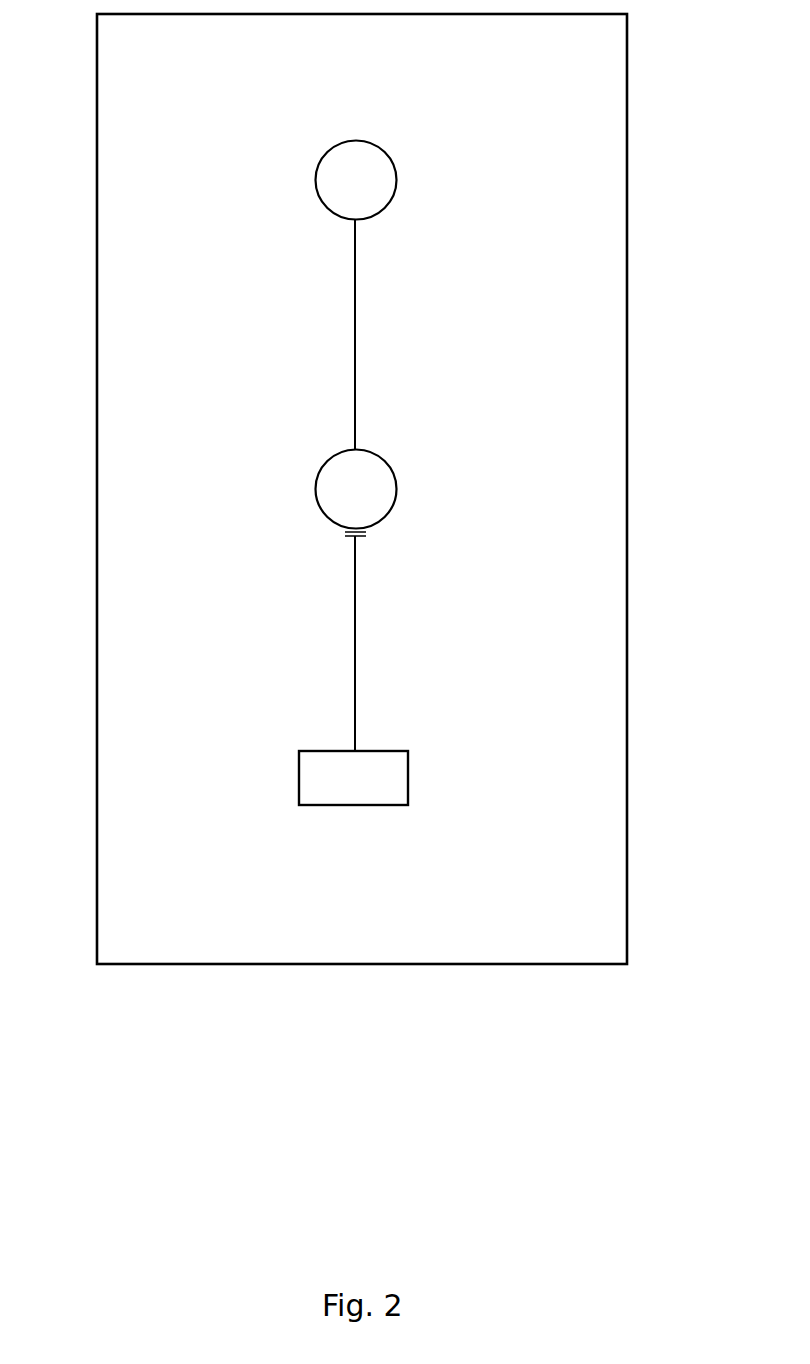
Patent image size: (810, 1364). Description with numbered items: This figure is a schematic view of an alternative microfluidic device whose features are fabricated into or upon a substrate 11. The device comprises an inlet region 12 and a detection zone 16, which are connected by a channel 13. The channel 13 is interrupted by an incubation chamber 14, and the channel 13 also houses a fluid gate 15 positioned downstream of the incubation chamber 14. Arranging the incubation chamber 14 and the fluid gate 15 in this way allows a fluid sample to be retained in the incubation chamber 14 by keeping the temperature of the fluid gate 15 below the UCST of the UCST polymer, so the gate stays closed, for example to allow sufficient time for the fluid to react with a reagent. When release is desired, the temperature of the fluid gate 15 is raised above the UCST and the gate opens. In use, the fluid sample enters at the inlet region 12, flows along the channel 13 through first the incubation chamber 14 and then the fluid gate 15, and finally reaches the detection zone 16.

The substrate 11 is at (157, 93).
The inlet region 12 is at (370, 180).
The channel 13 is at (355, 323).
The incubation chamber 14 is at (366, 486).
The fluid gate 15 is at (356, 534).
The detection zone 16 is at (388, 779).